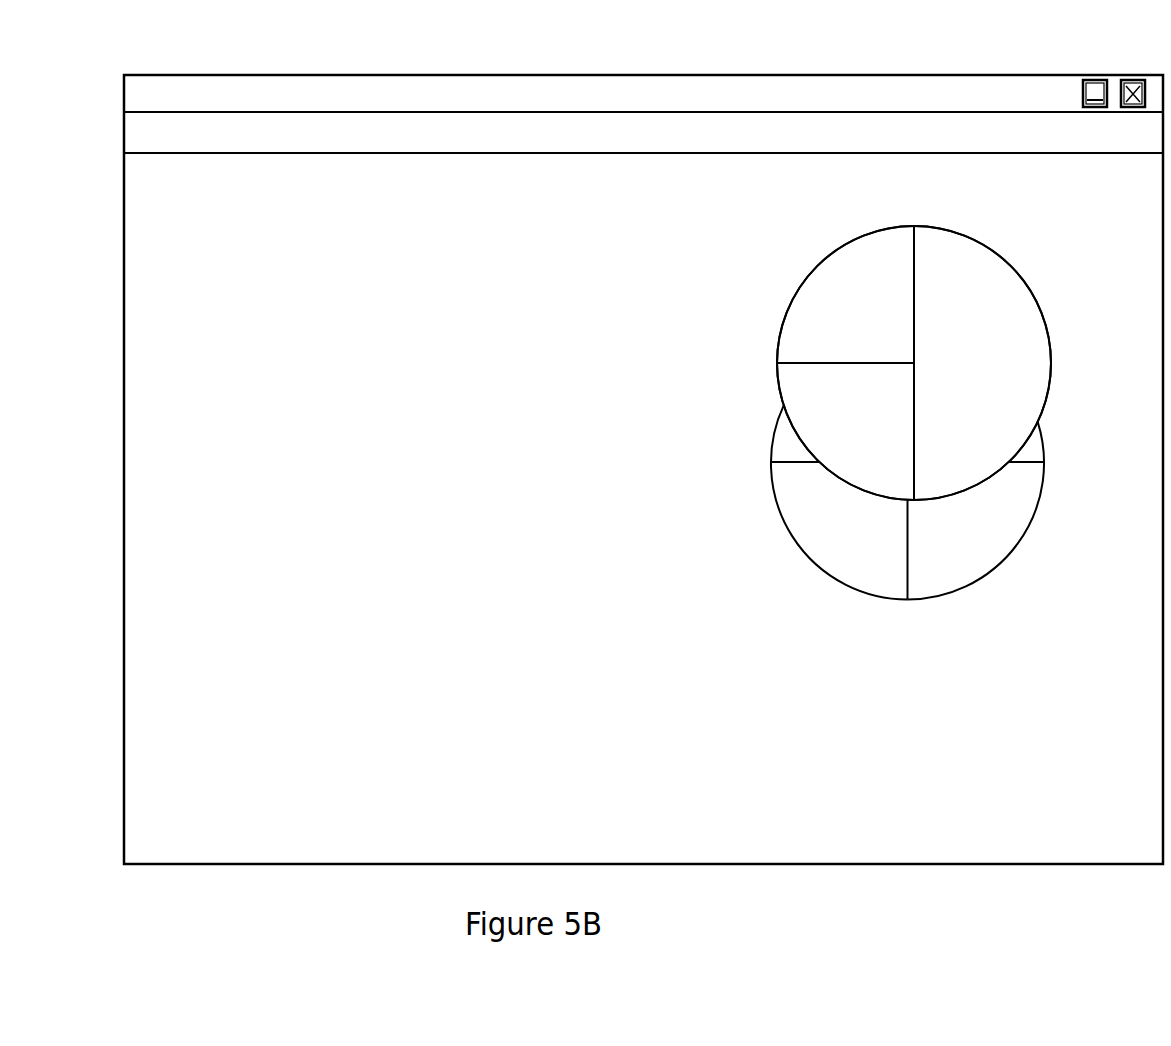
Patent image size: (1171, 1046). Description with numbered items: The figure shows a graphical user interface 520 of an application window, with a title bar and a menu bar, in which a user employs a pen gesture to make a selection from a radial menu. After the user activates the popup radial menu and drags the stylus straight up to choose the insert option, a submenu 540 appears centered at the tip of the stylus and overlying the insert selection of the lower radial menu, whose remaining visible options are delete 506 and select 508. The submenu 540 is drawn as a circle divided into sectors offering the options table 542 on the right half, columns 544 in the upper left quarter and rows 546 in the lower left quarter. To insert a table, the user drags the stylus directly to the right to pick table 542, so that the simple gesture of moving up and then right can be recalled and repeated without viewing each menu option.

The graphical user interface 520 is at (602, 469).
The submenu 540 is at (872, 363).
The table submenu option 542 is at (997, 363).
The columns submenu option 544 is at (798, 294).
The rows submenu option 546 is at (784, 431).
The delete menu option 506 is at (801, 502).
The select menu option 508 is at (1005, 511).